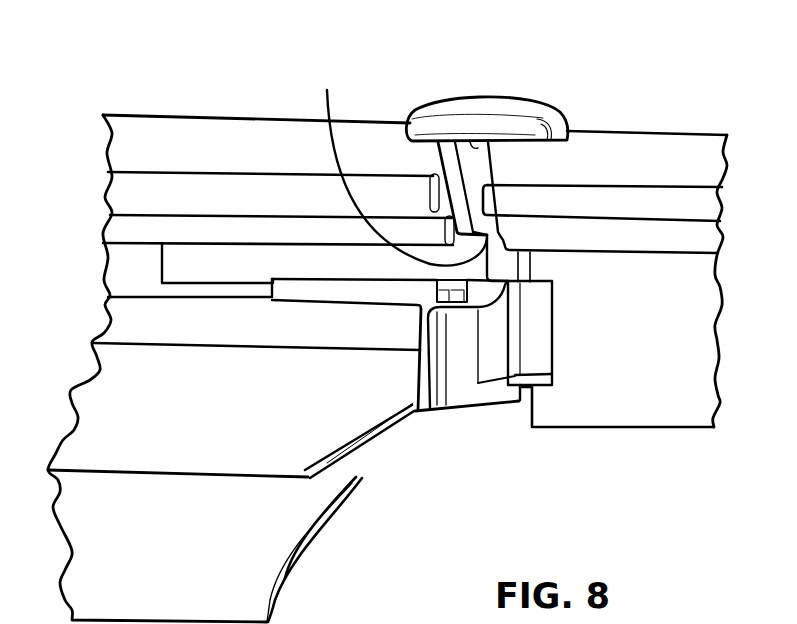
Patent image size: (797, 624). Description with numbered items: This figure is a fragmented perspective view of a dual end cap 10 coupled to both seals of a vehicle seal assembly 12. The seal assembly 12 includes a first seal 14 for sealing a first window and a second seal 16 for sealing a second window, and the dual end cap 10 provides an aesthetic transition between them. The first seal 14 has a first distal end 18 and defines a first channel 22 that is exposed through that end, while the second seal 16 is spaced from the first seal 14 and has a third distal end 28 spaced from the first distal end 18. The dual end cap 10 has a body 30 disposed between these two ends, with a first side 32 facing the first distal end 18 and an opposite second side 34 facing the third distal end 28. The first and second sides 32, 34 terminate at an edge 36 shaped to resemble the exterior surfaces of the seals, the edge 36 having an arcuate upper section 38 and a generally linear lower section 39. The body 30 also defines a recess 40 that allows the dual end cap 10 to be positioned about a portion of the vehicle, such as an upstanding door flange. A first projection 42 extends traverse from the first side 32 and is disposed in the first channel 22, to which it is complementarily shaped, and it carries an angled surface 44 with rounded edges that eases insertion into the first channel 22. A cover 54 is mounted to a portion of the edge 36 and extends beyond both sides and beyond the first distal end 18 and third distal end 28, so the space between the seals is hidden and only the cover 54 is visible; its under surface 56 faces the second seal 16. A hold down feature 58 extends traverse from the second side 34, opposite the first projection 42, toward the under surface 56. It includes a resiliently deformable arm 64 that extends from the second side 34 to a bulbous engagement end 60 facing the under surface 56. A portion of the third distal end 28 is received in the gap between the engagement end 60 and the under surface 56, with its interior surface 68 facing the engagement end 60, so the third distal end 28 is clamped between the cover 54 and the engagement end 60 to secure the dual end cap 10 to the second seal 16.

The dual end cap 10 is at (488, 78).
The seal assembly 12 is at (419, 72).
The first seal 14 is at (205, 86).
The second seal 16 is at (683, 112).
The first distal end 18 is at (427, 160).
The first channel 22 is at (147, 250).
The third distal end 28 is at (492, 163).
The body 30 is at (528, 266).
The first side 32 is at (412, 385).
The second side 34 is at (465, 390).
The edge 36 is at (438, 390).
The upper section 38 is at (480, 150).
The lower section 39 is at (460, 424).
The recess 40 is at (401, 184).
The first projection 42 is at (279, 256).
The angled surface 44 is at (180, 273).
The cover 54 is at (459, 106).
The under surface 56 is at (530, 395).
The hold down feature 58 is at (568, 350).
The engagement end 60 is at (553, 318).
The arm 64 is at (553, 373).
The interior surface 68 is at (630, 415).